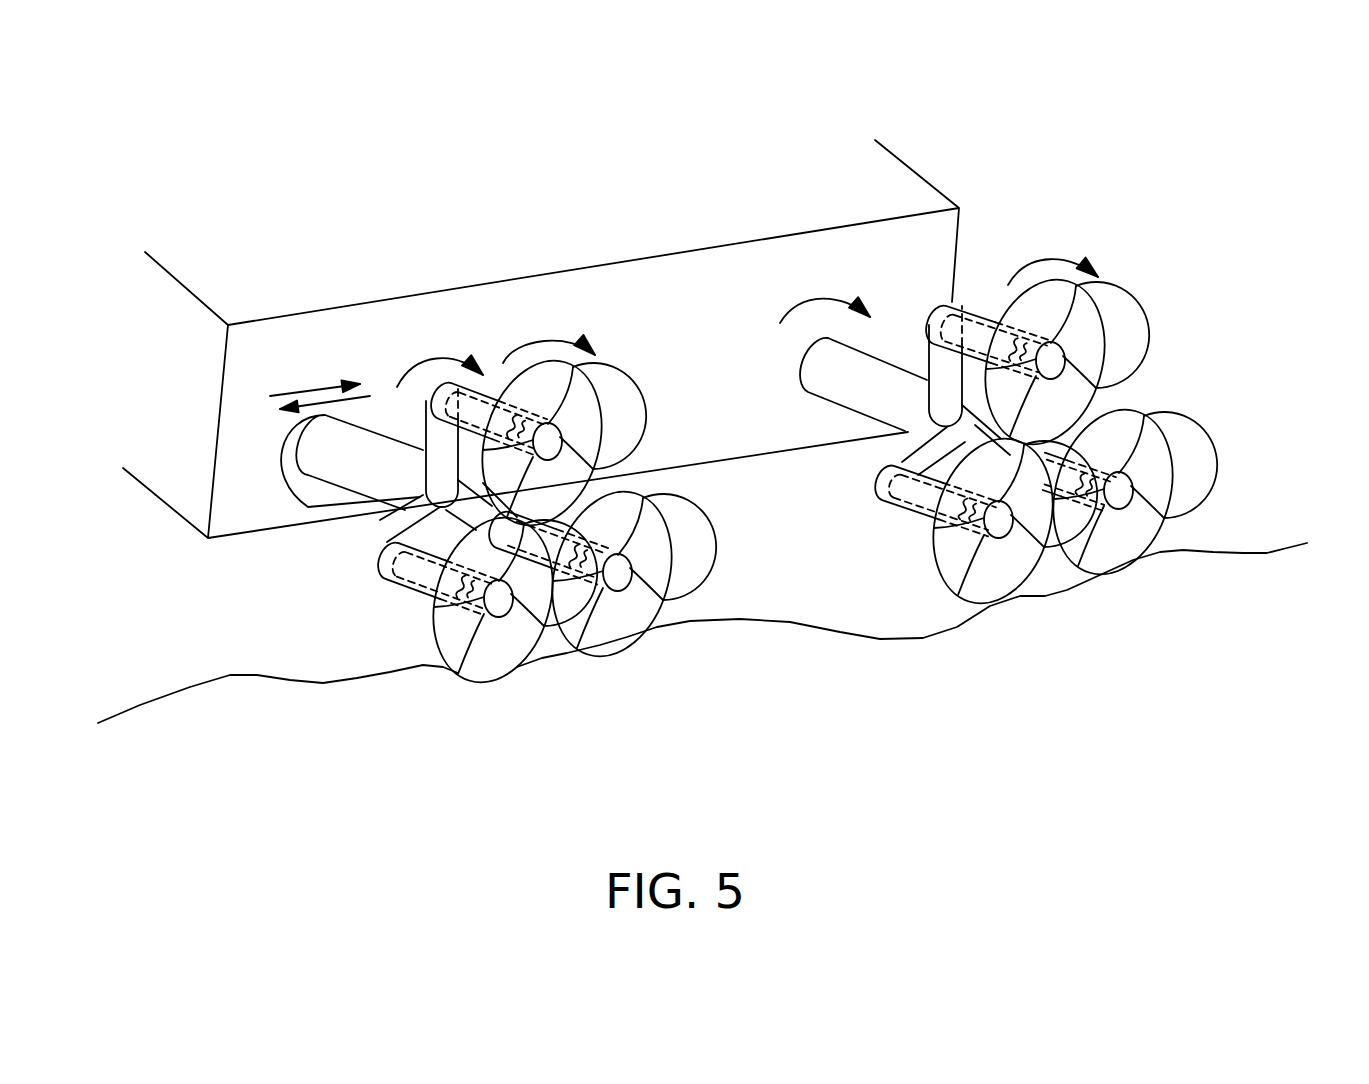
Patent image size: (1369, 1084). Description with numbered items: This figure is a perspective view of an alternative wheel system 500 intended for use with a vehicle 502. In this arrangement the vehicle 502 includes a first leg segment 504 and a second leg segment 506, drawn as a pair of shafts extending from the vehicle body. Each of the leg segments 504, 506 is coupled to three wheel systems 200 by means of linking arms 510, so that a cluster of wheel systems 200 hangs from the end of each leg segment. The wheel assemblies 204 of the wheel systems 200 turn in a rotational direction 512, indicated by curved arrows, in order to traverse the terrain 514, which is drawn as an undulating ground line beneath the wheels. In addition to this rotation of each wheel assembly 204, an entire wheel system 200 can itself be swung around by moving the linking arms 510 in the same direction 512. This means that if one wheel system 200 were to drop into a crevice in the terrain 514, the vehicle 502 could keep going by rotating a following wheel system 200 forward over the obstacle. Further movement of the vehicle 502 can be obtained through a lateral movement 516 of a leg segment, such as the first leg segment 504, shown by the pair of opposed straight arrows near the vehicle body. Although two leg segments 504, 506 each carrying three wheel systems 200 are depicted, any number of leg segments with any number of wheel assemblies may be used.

The wheel system 500 is at (1045, 145).
The vehicle 502 is at (605, 258).
The first leg segment 504 is at (380, 587).
The second leg segment 506 is at (845, 391).
The linking arms 510 is at (440, 460).
The rotational direction 512 is at (540, 337).
The terrain 514 is at (836, 682).
The lateral movement 516 is at (310, 387).
The wheel system 200 is at (473, 690).
The wheel assembly 204 is at (682, 552).